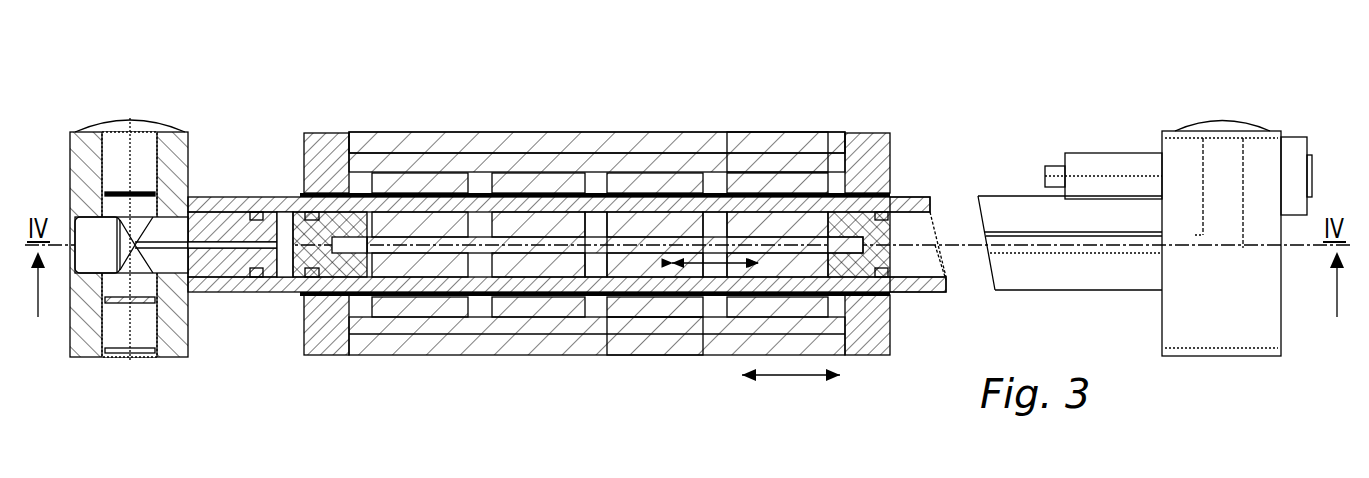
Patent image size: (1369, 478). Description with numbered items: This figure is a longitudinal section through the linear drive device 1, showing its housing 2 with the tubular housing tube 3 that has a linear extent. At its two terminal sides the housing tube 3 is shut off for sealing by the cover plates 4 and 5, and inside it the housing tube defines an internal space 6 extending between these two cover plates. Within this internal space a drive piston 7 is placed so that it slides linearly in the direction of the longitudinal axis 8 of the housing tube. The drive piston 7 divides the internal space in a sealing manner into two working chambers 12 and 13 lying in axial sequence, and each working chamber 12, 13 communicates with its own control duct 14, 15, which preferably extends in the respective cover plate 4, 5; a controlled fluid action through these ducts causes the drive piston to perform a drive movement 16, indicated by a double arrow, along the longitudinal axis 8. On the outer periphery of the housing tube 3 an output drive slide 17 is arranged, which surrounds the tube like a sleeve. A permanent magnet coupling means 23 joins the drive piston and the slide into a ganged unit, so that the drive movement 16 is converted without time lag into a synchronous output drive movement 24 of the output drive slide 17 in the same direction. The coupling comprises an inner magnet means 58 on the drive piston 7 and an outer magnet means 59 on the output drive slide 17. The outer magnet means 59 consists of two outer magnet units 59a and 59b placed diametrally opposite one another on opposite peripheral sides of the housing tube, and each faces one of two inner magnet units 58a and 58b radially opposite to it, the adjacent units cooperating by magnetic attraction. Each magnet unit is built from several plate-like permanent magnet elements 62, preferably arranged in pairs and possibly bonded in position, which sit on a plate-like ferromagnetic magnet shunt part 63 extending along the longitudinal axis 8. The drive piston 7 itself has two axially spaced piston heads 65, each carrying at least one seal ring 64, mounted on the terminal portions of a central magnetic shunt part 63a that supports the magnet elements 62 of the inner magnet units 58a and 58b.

The linear drive device 1 is at (1096, 133).
The housing 2 is at (226, 300).
The housing tube 3 is at (414, 205).
The cover plate 4 is at (182, 147).
The cover plate 5 is at (1183, 155).
The internal space 6 is at (930, 215).
The drive piston 7 is at (404, 278).
The longitudinal axis 8 is at (921, 292).
The working chamber 12 is at (285, 217).
The working chamber 13 is at (930, 226).
The control duct 14 is at (222, 243).
The control duct 15 is at (1232, 160).
The drive movement 16 is at (716, 265).
The output drive slide 17 is at (826, 130).
The permanent magnet coupling means 23 is at (703, 208).
The output drive movement 24 is at (797, 380).
The inner magnet means 58 is at (495, 335).
The inner magnet unit 58a is at (511, 272).
The inner magnet unit 58b is at (509, 207).
The outer magnet means 59 is at (560, 350).
The outer magnet unit 59a is at (657, 168).
The outer magnet unit 59b is at (563, 310).
The magnet element 62 is at (568, 205).
The magnet shunt part 63 is at (790, 160).
The central magnetic shunt part 63a is at (600, 240).
The seal ring 64 is at (313, 280).
The piston head 65 is at (337, 215).